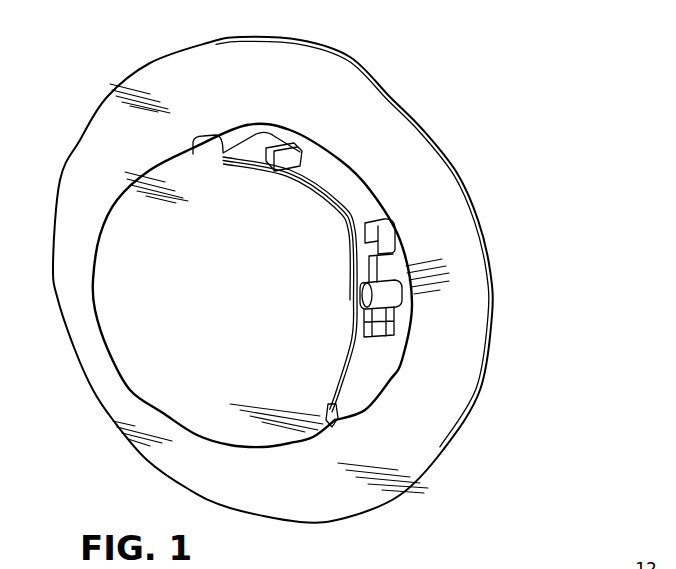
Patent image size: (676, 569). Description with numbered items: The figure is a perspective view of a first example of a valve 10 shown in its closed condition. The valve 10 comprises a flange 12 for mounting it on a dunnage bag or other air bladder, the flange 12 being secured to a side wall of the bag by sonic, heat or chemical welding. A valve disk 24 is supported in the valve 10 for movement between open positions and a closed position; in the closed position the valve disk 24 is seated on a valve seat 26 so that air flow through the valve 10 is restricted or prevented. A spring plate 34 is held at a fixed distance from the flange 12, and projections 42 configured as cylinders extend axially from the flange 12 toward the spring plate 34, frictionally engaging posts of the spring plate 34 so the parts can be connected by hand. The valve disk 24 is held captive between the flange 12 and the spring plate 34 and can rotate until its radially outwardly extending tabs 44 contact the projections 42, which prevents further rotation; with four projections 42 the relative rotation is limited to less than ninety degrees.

The valve 10 is at (311, 263).
The flange 12 is at (457, 350).
The valve disk 24 is at (337, 222).
The valve seat 26 is at (360, 227).
The spring plate 34 is at (144, 344).
The projections 42 is at (392, 294).
The tabs 44 is at (386, 220).